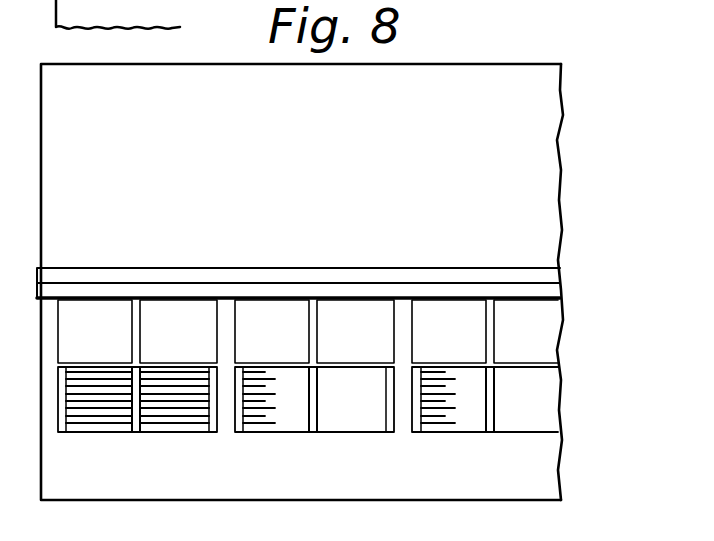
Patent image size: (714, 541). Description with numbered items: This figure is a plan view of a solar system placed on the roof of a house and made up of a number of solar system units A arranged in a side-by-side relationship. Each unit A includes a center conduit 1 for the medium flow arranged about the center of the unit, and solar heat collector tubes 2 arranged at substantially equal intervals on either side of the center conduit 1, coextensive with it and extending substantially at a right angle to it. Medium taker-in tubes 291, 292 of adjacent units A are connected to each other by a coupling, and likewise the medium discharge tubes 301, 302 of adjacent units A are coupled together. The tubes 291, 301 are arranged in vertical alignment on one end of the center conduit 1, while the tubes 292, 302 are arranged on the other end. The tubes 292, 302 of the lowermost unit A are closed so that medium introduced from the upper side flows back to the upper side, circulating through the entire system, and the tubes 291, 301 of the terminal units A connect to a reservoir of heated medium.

The center conduit 1 is at (136, 305).
The solar heat collector tubes 2 is at (171, 410).
The unit A is at (172, 312).
The medium taker-in tube 291 is at (538, 333).
The medium taker-in tube 292 is at (308, 435).
The medium discharge tube 301 is at (496, 365).
The medium discharge tube 302 is at (492, 433).